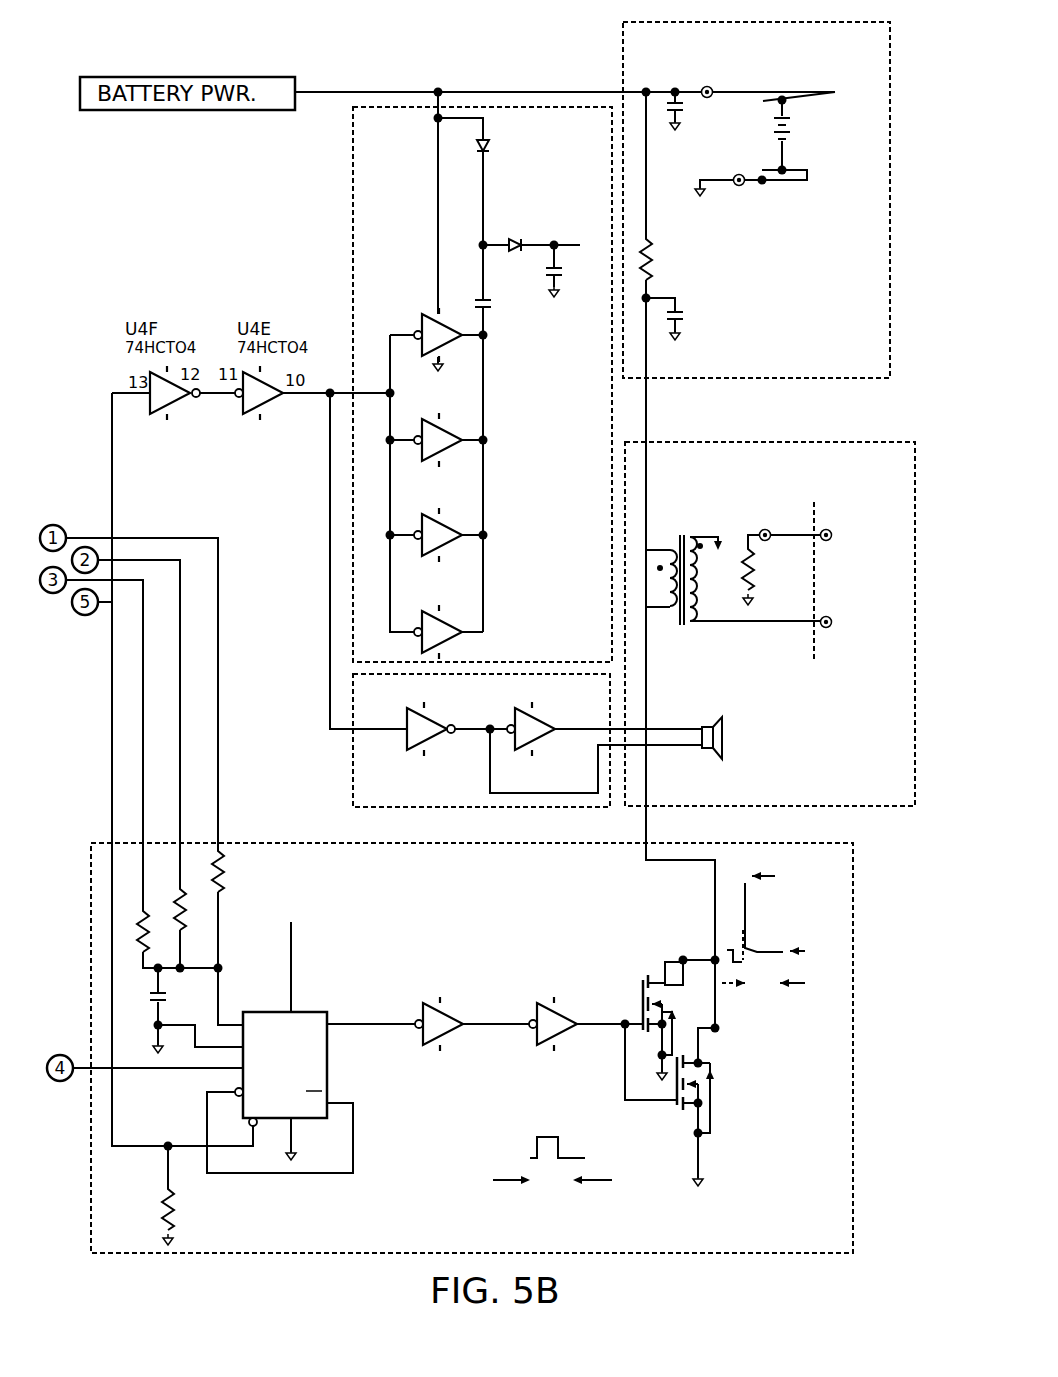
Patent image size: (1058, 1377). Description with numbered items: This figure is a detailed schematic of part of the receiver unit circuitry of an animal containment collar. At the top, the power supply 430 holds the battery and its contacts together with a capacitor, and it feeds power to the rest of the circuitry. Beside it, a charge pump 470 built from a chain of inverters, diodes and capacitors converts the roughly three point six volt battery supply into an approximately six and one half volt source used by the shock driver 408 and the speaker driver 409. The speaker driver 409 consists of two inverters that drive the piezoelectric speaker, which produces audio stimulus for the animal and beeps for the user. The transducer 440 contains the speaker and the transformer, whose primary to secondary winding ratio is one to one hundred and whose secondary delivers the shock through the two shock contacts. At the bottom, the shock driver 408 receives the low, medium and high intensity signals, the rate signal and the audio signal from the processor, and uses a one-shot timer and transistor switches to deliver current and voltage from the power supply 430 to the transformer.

The power supply 430 is at (622, 50).
The charge pump 470 is at (353, 226).
The speaker driver 409 is at (353, 758).
The transducer 440 is at (845, 806).
The shock driver 408 is at (230, 1253).